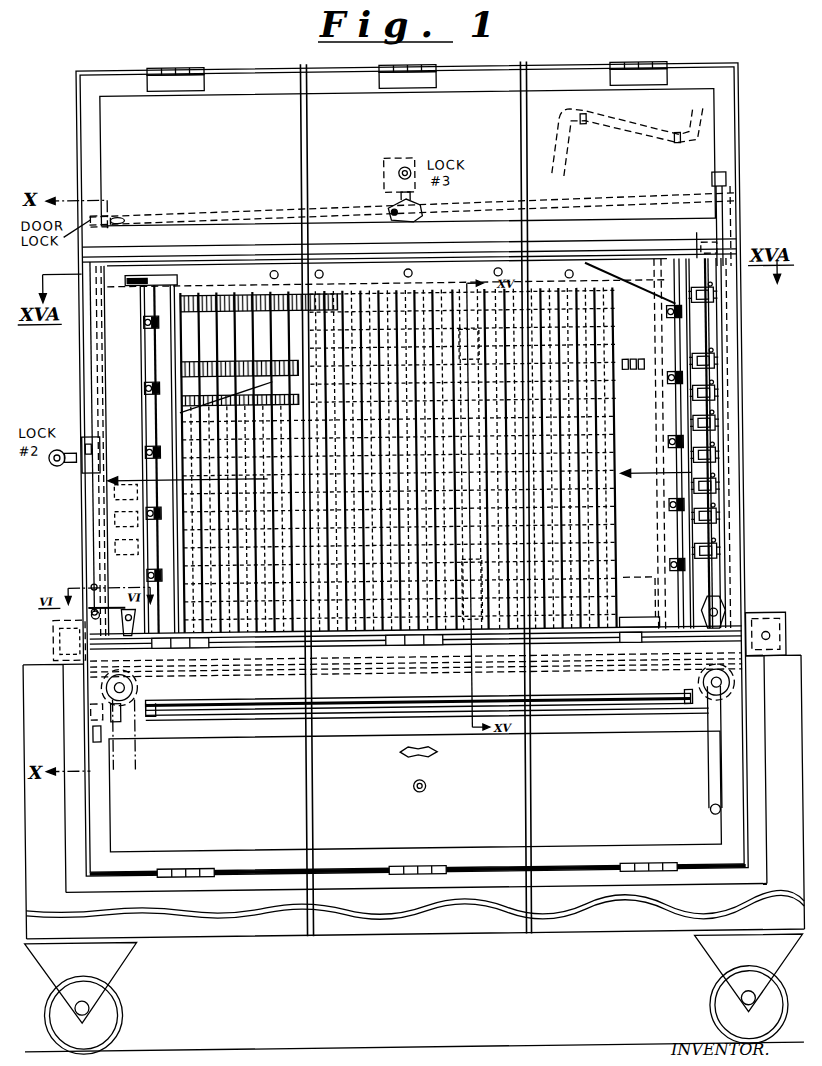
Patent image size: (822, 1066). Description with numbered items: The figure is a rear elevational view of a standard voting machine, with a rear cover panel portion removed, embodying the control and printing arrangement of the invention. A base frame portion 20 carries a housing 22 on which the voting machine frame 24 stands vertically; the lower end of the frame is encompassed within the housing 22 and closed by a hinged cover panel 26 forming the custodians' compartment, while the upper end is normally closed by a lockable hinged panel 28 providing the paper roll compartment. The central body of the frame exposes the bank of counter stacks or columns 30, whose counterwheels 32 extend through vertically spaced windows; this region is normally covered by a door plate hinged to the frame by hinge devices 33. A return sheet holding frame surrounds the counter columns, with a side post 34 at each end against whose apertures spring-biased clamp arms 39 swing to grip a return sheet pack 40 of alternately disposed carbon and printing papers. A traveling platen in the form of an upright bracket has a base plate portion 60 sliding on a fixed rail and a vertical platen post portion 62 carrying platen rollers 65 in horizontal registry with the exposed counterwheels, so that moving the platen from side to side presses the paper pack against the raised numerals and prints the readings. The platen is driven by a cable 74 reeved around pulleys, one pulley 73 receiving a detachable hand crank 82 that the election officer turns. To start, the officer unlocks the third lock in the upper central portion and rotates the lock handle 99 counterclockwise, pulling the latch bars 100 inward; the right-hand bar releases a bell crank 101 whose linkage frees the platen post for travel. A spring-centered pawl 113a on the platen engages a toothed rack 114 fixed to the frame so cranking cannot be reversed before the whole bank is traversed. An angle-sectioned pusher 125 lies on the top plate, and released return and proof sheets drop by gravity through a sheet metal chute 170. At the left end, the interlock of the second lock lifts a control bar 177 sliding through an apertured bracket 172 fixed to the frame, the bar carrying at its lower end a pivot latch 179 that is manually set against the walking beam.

The base frame portion 20 is at (275, 933).
The housing 22 is at (179, 897).
The voting machine frame 24 is at (80, 354).
The hinged cover panel 26 is at (372, 797).
The lockable hinged panel 28 is at (418, 145).
The counter stacks or columns 30 is at (228, 331).
The counterwheels 32 is at (181, 301).
The hinge devices 33 is at (194, 644).
The side post 34 is at (151, 418).
The clamp arms 39 is at (148, 450).
The return sheet pack 40 is at (612, 709).
The base plate portion 60 is at (760, 615).
The platen post portion 62 is at (720, 344).
The platen rollers 65 is at (726, 299).
The pulley 73 is at (88, 707).
The cable 74 is at (129, 736).
The hand crank 82 is at (607, 129).
The lock handle 99 is at (392, 209).
The latch bars 100 is at (219, 208).
The bell crank 101 is at (716, 184).
The spring-centered pawl 113a is at (716, 628).
The toothed rack 114 is at (635, 623).
The pusher 125 is at (261, 262).
The chute device 170 is at (698, 246).
The apertured bracket 172 is at (87, 608).
The control bar 177 is at (90, 554).
The pivot latch 179 is at (92, 726).